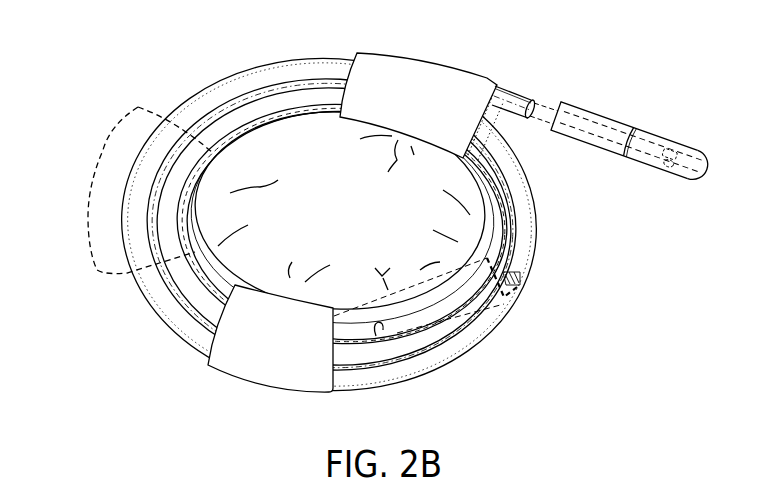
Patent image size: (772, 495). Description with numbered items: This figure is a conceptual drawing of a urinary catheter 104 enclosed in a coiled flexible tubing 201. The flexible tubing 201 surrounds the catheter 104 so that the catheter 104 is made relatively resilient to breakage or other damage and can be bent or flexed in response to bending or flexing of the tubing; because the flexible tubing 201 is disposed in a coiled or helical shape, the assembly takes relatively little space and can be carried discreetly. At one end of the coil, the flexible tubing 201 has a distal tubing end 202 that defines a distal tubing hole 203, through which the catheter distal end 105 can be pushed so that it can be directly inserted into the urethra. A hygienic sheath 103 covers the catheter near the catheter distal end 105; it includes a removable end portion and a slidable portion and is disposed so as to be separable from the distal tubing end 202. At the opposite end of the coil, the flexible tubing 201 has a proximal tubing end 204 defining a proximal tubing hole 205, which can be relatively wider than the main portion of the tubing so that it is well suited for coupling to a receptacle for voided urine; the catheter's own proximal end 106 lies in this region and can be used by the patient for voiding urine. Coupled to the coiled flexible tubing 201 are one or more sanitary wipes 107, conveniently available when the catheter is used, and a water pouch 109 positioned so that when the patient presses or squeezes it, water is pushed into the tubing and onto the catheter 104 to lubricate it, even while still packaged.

The flexible tubing 201 is at (247, 72).
The distal tubing end 202 is at (523, 75).
The distal tubing hole 203 is at (532, 97).
The hygienic sheath 103 is at (657, 137).
The catheter 104 is at (643, 149).
The catheter distal end 105 is at (699, 172).
The sanitary wipes 107 is at (94, 237).
The water pouch 109 is at (353, 224).
The proximal end 106 is at (376, 336).
The proximal tubing end 204 is at (400, 328).
The proximal tubing hole 205 is at (522, 278).